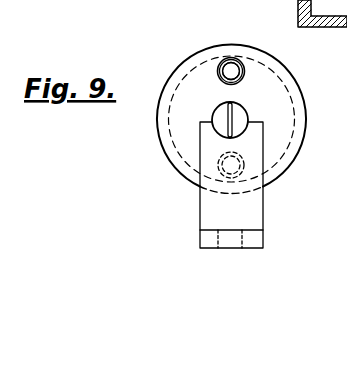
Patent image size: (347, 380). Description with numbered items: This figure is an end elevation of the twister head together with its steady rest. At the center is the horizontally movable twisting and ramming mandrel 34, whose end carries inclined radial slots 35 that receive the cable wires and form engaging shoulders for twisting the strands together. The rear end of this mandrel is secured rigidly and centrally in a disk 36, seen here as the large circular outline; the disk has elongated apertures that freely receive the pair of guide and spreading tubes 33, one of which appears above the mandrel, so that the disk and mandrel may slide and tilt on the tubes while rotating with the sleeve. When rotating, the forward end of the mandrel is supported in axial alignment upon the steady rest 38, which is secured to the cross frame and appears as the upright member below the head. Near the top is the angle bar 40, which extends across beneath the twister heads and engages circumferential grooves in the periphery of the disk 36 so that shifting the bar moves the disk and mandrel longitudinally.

The guide and spreading tubes 33 is at (231, 57).
The twisting and ramming mandrel 34 is at (222, 80).
The inclined radial slots 35 is at (233, 126).
The disk 36 is at (177, 128).
The steady rest 38 is at (216, 192).
The angle bar 40 is at (299, 10).